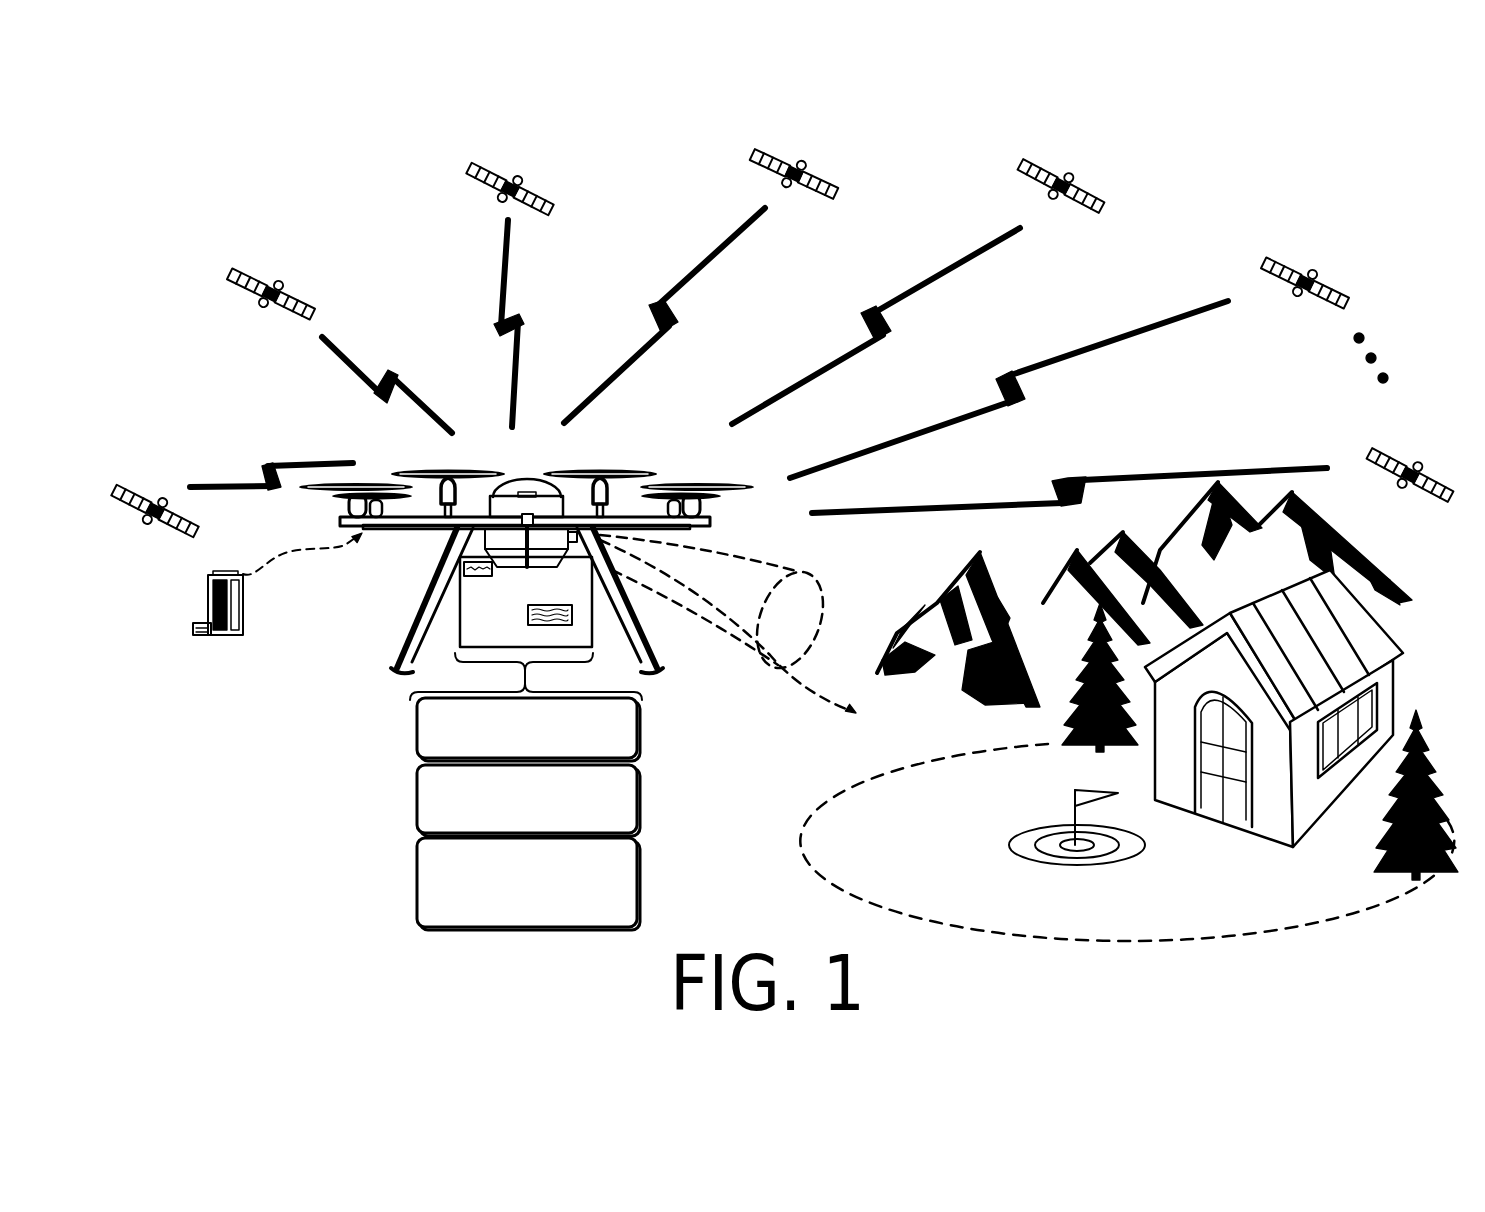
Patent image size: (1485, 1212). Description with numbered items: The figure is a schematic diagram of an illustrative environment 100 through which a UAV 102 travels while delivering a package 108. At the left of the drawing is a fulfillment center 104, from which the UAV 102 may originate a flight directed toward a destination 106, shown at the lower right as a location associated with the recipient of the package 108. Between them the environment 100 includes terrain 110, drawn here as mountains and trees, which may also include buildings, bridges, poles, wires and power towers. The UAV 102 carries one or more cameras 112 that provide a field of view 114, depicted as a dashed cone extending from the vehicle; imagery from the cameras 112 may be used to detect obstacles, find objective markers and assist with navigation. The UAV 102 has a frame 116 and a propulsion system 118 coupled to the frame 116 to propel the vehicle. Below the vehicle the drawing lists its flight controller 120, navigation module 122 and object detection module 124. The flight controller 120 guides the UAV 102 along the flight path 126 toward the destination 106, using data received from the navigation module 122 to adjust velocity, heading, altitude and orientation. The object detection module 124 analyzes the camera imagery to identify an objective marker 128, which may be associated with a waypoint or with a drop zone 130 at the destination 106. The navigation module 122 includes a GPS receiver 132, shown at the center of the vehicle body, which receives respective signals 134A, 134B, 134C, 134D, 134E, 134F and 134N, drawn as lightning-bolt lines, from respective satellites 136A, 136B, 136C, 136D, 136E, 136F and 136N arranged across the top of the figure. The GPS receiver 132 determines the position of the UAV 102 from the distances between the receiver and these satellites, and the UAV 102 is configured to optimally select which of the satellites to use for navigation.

The environment 100 is at (1236, 150).
The UAV 102 is at (500, 472).
The fulfillment center 104 is at (261, 610).
The destination 106 is at (940, 793).
The package 108 is at (478, 622).
The terrain 110 is at (1044, 548).
The camera 112 is at (576, 540).
The field of view 114 is at (813, 572).
The frame 116 is at (455, 532).
The propulsion system 118 is at (600, 470).
The flight controller 120 is at (528, 729).
The navigation module 122 is at (528, 800).
The object detection module 124 is at (528, 884).
The flight path 126 is at (812, 690).
The objective marker 128 is at (1074, 791).
The drop zone 130 is at (1100, 866).
The GPS receiver 132 is at (530, 470).
The signal 134A is at (263, 465).
The signal 134B is at (340, 353).
The signal 134C is at (511, 330).
The signal 134D is at (675, 322).
The signal 134E is at (860, 340).
The signal 134F is at (1005, 380).
The signal 134N is at (1058, 484).
The satellite 136A is at (140, 490).
The satellite 136B is at (245, 272).
The satellite 136C is at (468, 170).
The satellite 136D is at (752, 155).
The satellite 136E is at (1022, 168).
The satellite 136F is at (1272, 262).
The satellite 136N is at (1400, 460).